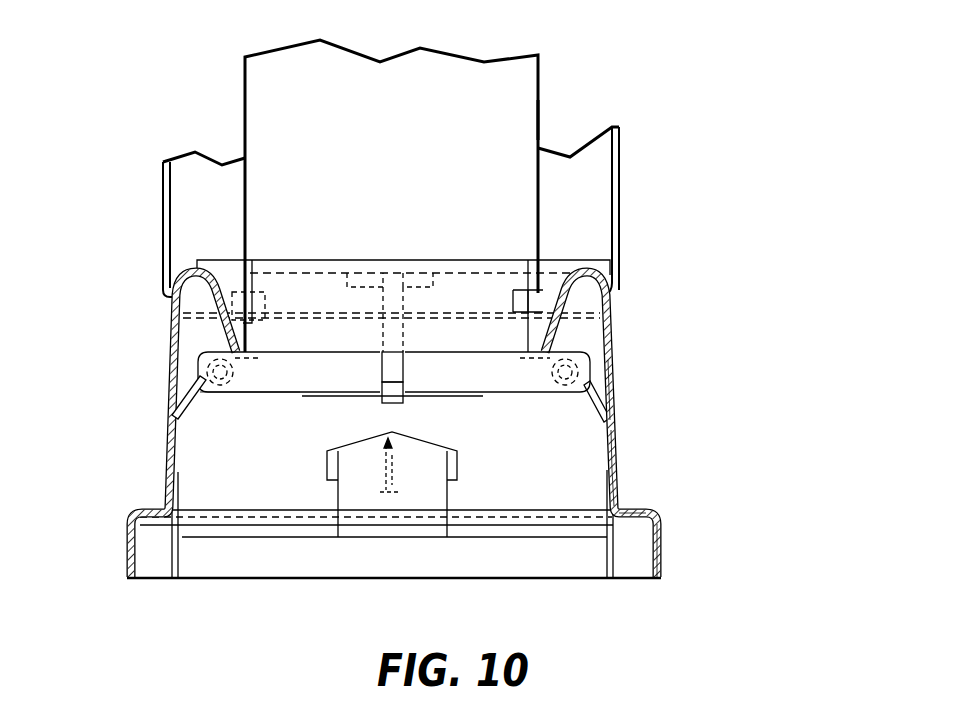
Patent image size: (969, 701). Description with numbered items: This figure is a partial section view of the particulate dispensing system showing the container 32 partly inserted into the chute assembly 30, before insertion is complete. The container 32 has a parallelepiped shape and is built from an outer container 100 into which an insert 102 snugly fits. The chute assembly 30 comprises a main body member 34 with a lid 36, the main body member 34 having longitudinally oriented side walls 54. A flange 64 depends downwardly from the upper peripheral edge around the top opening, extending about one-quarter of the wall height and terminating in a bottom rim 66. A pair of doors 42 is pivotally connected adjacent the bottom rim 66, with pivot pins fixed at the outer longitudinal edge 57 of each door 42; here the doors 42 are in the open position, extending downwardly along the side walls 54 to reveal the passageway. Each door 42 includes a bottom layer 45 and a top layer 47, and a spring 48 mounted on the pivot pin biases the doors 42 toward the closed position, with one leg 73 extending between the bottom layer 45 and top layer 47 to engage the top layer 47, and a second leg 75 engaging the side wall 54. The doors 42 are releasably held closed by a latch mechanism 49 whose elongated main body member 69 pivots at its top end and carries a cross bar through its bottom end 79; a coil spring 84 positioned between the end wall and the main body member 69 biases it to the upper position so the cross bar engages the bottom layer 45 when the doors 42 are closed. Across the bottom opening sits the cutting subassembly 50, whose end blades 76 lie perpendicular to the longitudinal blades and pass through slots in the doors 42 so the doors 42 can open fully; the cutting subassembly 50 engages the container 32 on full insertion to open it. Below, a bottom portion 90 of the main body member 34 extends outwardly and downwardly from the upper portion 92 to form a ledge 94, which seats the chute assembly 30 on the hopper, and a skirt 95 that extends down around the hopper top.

The container 32 is at (540, 63).
The outer container 100 is at (540, 115).
The lid 36 is at (619, 182).
The flange 64 is at (572, 292).
The outer longitudinal edge 57 is at (590, 352).
The chute assembly 30 is at (620, 343).
The side wall 54 is at (617, 398).
The main body member 34 is at (623, 450).
The upper portion 92 is at (623, 470).
The skirt 95 is at (650, 517).
The bottom portion 90 is at (662, 552).
The ledge 94 is at (660, 568).
The insert 102 is at (276, 333).
The top layer 47 is at (340, 352).
The main body member 69 is at (390, 333).
The coil spring 84 is at (443, 393).
The bottom rim 66 is at (220, 352).
The spring 48 is at (182, 395).
The second leg 75 is at (196, 396).
The leg 73 is at (235, 394).
The bottom layer 45 is at (284, 394).
The bottom end 79 is at (385, 367).
The latch mechanism 49 is at (393, 393).
The door 42 is at (487, 367).
The end blade 76 is at (459, 456).
The cutting subassembly 50 is at (450, 490).